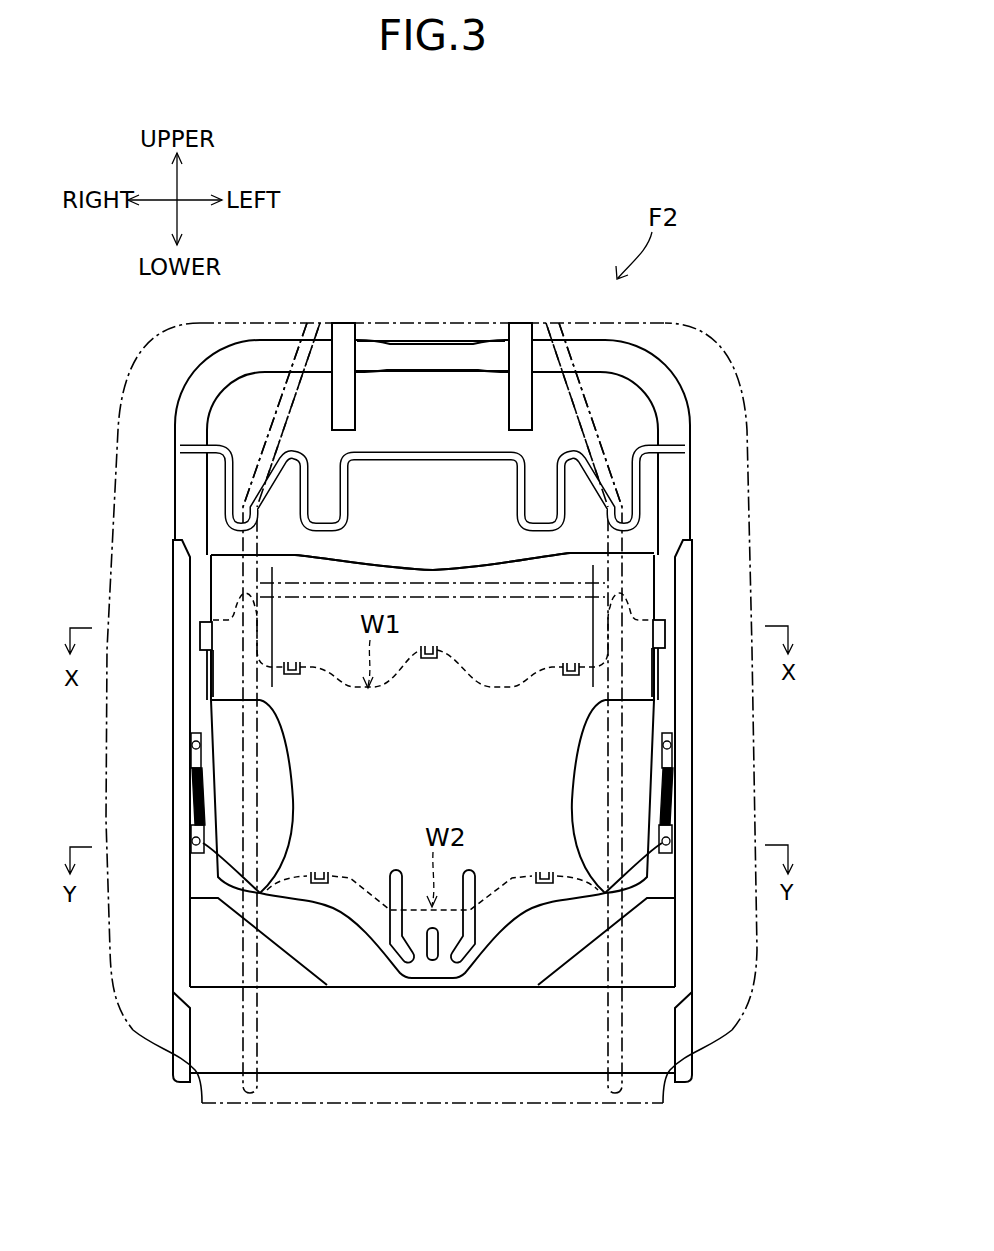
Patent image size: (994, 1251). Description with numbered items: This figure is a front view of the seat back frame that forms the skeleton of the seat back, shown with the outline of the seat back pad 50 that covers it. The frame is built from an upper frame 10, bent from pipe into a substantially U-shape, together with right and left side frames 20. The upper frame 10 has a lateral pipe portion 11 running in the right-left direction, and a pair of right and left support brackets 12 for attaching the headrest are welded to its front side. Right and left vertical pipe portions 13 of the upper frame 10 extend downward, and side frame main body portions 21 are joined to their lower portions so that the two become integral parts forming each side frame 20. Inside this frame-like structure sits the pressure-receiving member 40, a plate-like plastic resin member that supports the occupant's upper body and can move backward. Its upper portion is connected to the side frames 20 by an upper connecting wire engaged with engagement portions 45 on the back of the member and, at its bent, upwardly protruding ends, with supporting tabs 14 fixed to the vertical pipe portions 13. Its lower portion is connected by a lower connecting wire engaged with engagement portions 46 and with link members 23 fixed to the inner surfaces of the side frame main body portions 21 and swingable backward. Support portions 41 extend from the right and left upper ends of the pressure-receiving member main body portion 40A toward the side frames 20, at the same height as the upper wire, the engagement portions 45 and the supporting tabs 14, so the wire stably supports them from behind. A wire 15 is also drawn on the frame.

The upper frame 10 is at (663, 353).
The lateral pipe portion 11 is at (446, 346).
The support bracket 12 is at (342, 325).
The vertical pipe portion 13 is at (182, 518).
The supporting tab 14 is at (200, 632).
The support wire 15 is at (452, 473).
The side frame 20 is at (439, 761).
The side frame main body portion 21 is at (176, 556).
The link member 23 is at (216, 779).
The pressure-receiving member 40 is at (394, 556).
The pressure-receiving member main body portion 40A is at (490, 568).
The support portion 41 is at (228, 670).
The engagement portion 45 is at (293, 676).
The engagement portion 46 is at (322, 885).
The seat back pad 50 is at (401, 321).